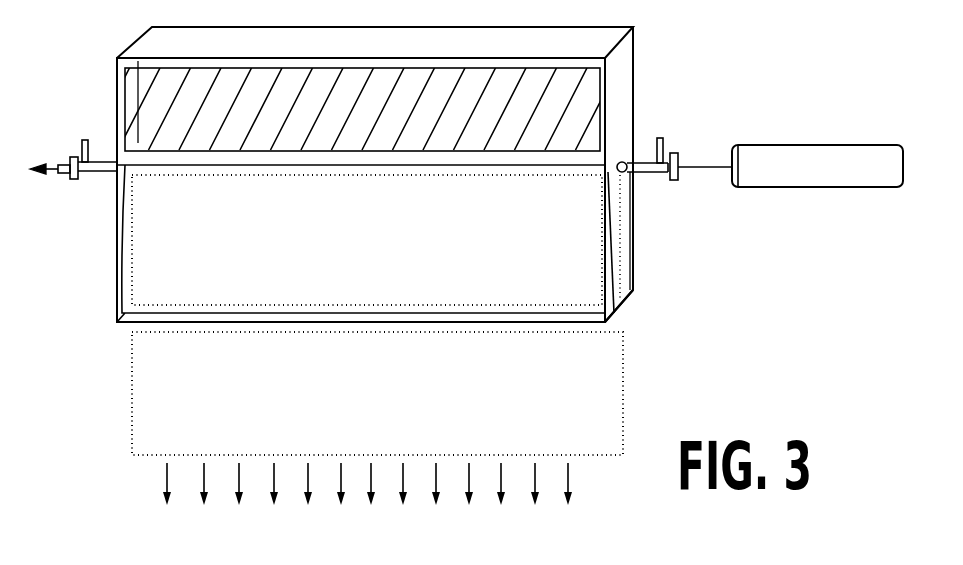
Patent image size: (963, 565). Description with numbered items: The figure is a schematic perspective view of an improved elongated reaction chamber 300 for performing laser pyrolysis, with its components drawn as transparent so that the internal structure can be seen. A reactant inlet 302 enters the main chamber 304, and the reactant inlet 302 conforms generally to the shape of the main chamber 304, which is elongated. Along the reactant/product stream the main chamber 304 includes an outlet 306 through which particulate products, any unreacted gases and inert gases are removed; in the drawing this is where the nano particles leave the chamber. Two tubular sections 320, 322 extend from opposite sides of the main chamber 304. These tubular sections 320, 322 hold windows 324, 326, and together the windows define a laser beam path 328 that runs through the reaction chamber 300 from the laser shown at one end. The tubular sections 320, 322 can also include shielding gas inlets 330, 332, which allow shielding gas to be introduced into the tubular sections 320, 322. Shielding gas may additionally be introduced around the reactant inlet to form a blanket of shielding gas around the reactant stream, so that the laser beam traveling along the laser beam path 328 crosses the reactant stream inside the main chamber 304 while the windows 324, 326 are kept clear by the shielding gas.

The reaction chamber 300 is at (455, 273).
The reactant inlet 302 is at (448, 30).
The main chamber 304 is at (615, 224).
The outlet 306 is at (626, 302).
The tubular section 320 is at (658, 180).
The tubular section 322 is at (93, 179).
The window 324 is at (680, 158).
The window 326 is at (72, 179).
The laser beam path 328 is at (118, 226).
The shielding gas inlet 330 is at (665, 146).
The shielding gas inlet 332 is at (80, 143).